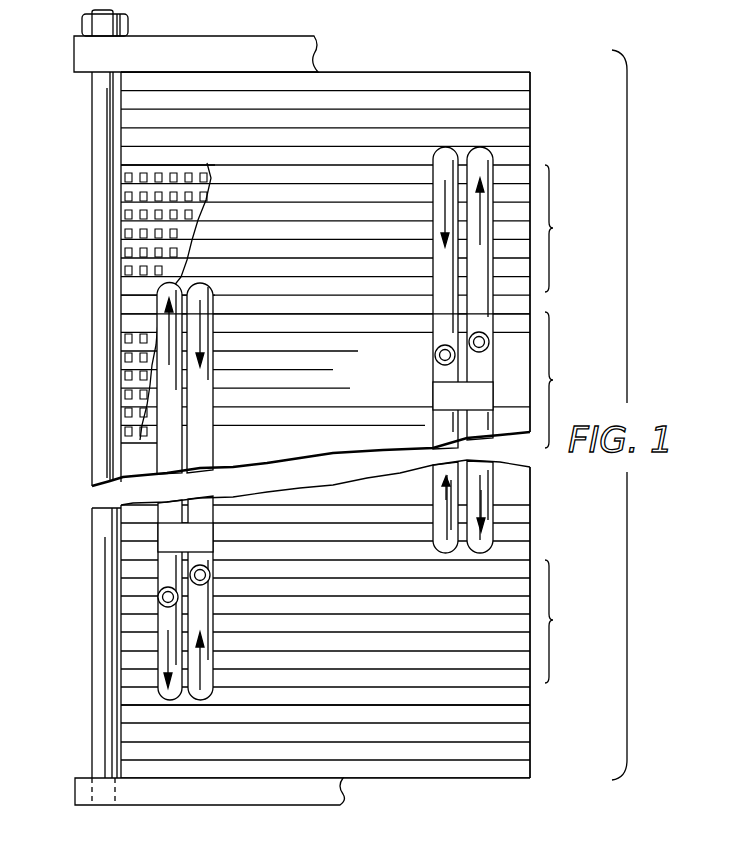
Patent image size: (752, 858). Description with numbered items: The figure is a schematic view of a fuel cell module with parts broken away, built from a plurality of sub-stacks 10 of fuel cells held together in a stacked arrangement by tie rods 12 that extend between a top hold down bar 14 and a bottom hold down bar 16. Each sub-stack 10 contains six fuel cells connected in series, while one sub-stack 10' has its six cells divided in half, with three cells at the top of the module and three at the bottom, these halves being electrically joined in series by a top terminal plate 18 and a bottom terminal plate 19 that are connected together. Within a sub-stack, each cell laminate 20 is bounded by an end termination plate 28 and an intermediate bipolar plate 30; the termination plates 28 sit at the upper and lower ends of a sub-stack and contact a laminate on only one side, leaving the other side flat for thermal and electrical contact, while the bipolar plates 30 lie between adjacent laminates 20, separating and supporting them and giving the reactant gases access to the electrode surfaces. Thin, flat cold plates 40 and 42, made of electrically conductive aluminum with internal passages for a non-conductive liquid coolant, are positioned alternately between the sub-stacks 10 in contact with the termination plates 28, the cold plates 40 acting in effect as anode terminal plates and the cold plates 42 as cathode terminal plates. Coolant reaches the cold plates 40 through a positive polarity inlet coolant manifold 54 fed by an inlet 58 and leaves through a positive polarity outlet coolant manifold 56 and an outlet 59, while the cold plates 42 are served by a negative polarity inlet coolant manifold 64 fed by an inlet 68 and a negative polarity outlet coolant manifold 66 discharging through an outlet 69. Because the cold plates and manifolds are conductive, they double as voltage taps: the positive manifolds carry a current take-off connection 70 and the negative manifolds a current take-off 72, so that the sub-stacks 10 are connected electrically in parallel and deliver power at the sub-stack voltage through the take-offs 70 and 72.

The sub-stack 10 is at (559, 424).
The sub-stack 10' is at (564, 425).
The tie rod 12 is at (97, 110).
The top hold down bar 14 is at (284, 47).
The bottom hold down bar 16 is at (188, 796).
The top terminal plate 18 is at (383, 77).
The bottom terminal plate 19 is at (465, 772).
The cell laminate 20 is at (122, 217).
The end termination plate 28 is at (124, 164).
The bipolar plate 30 is at (193, 228).
The cold plate 40 is at (520, 158).
The cold plate 42 is at (520, 308).
The positive polarity inlet coolant manifold 54 is at (483, 498).
The positive polarity outlet coolant manifold 56 is at (442, 475).
The inlet 58 is at (481, 353).
The outlet 59 is at (435, 343).
The negative polarity inlet coolant manifold 64 is at (160, 618).
The negative polarity outlet coolant manifold 66 is at (205, 605).
The inlet 68 is at (160, 590).
The outlet 69 is at (210, 573).
The current take-off connection 70 is at (443, 393).
The current take-off 72 is at (203, 535).